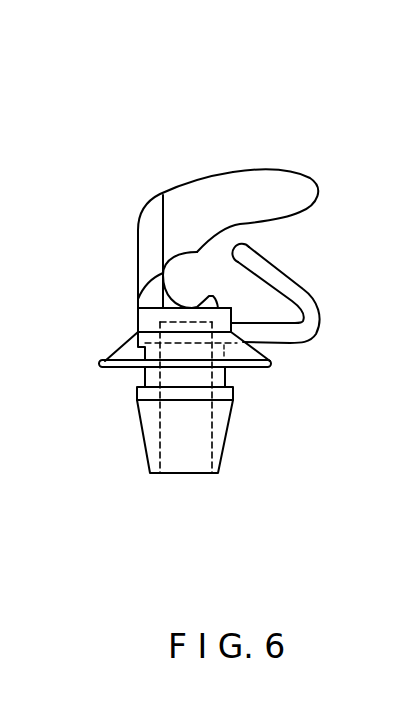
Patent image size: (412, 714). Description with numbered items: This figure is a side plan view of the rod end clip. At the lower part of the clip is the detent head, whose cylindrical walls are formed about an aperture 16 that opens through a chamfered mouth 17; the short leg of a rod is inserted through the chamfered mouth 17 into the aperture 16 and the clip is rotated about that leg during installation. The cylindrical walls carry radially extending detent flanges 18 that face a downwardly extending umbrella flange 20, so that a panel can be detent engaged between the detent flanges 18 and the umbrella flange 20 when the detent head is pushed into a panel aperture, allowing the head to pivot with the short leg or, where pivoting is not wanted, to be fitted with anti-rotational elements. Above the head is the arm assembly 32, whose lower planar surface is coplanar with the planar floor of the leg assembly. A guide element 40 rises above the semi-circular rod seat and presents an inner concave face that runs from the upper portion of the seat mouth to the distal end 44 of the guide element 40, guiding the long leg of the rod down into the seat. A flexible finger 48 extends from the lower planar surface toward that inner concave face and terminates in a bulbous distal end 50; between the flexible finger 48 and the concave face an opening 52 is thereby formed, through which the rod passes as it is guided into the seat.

The arm assembly 32 is at (275, 150).
The guide element 40 is at (193, 197).
The distal end 44 is at (327, 190).
The opening 52 is at (267, 238).
The flexible finger 48 is at (290, 277).
The bulbous distal end 50 is at (238, 242).
The chamfered mouth 17 is at (153, 310).
The umbrella flange 20 is at (240, 367).
The radially extending detent flanges 18 is at (230, 433).
The aperture 16 is at (210, 437).